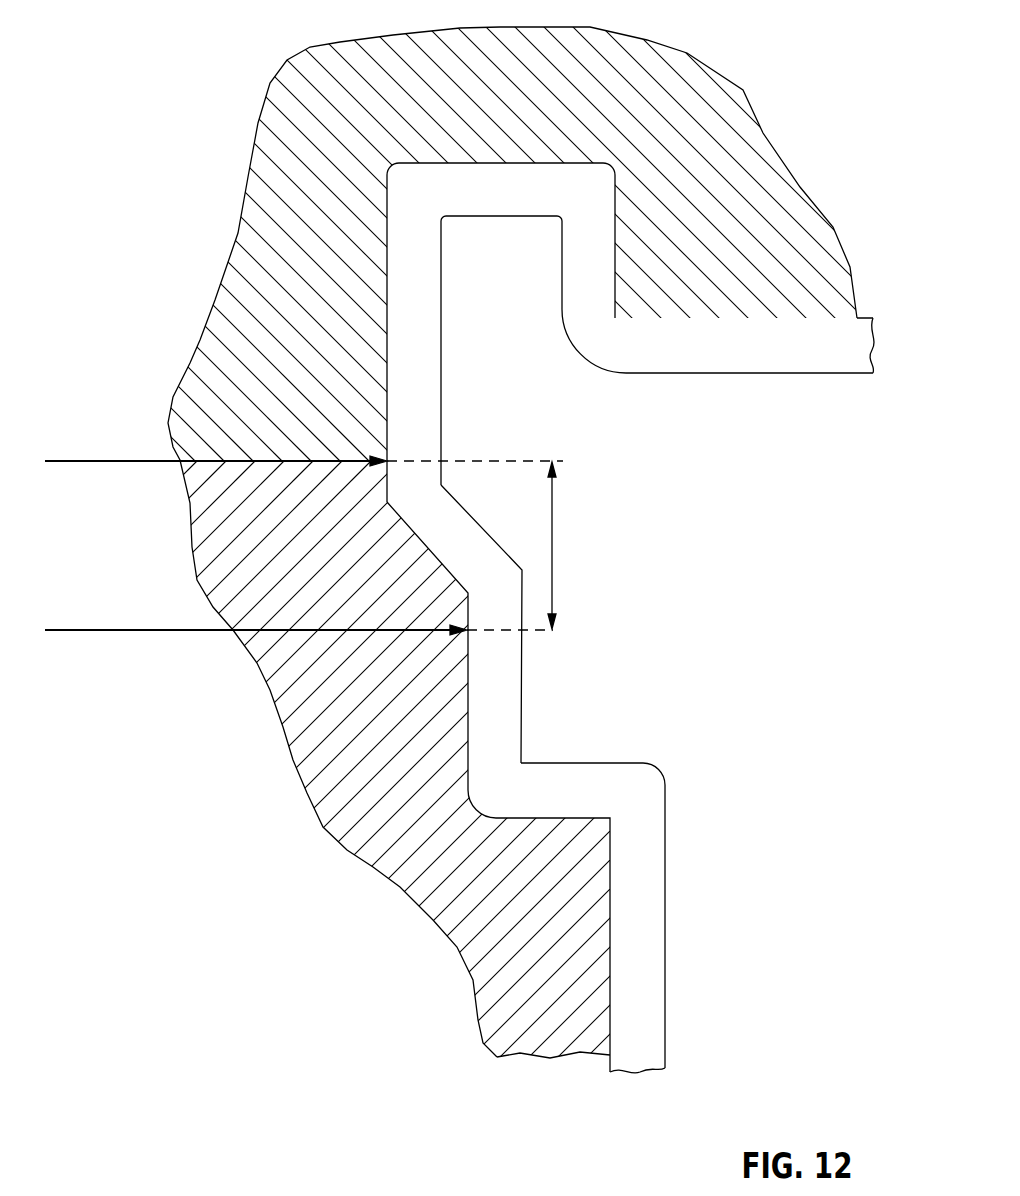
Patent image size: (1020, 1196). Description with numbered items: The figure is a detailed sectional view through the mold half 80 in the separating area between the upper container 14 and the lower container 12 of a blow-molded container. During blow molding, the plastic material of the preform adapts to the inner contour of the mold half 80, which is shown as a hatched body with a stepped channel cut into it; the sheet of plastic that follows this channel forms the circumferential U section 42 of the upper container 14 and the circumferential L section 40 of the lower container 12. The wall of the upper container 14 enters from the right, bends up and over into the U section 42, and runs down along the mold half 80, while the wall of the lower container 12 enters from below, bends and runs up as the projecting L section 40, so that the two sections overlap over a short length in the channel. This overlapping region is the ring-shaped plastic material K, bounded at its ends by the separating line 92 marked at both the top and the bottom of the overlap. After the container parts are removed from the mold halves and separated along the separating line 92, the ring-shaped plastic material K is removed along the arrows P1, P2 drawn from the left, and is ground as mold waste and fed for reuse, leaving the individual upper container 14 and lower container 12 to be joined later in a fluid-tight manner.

The mold half 80 is at (327, 281).
The upper container 14 is at (805, 350).
The U section 42 is at (583, 253).
The L section 40 is at (507, 703).
The lower container 12 is at (647, 923).
The separating line 92 is at (485, 460).
The ring-shaped plastic material K is at (552, 540).
The arrow P1 is at (85, 461).
The arrow P2 is at (95, 630).